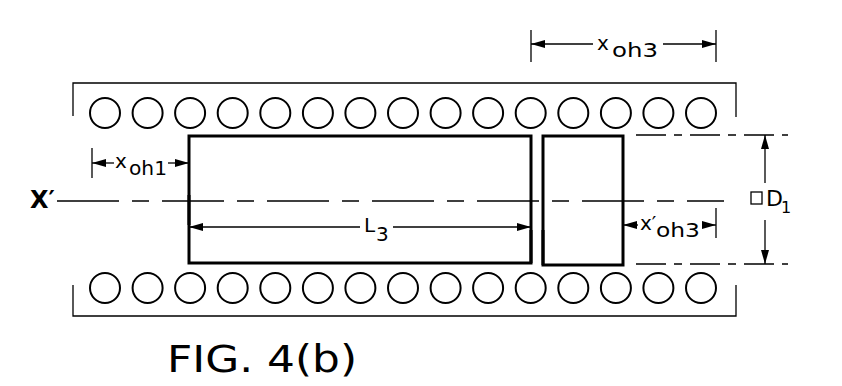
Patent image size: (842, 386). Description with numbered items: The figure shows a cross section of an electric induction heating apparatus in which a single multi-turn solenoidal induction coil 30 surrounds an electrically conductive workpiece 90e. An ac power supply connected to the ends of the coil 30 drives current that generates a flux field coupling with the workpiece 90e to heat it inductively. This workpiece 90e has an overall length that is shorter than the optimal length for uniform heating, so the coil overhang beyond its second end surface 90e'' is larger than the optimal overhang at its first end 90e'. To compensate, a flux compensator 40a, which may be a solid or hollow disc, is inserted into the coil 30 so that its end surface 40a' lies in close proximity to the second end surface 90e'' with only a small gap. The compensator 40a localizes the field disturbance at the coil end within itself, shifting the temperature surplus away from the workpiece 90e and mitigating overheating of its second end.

The multi-turn solenoidal induction coil 30 is at (404, 83).
The workpiece 90e is at (360, 199).
The compensator 40a is at (583, 200).
The first end of workpiece 90e' is at (149, 214).
The second end surface of workpiece 90e'' is at (498, 298).
The end surface of compensator 40a' is at (581, 294).